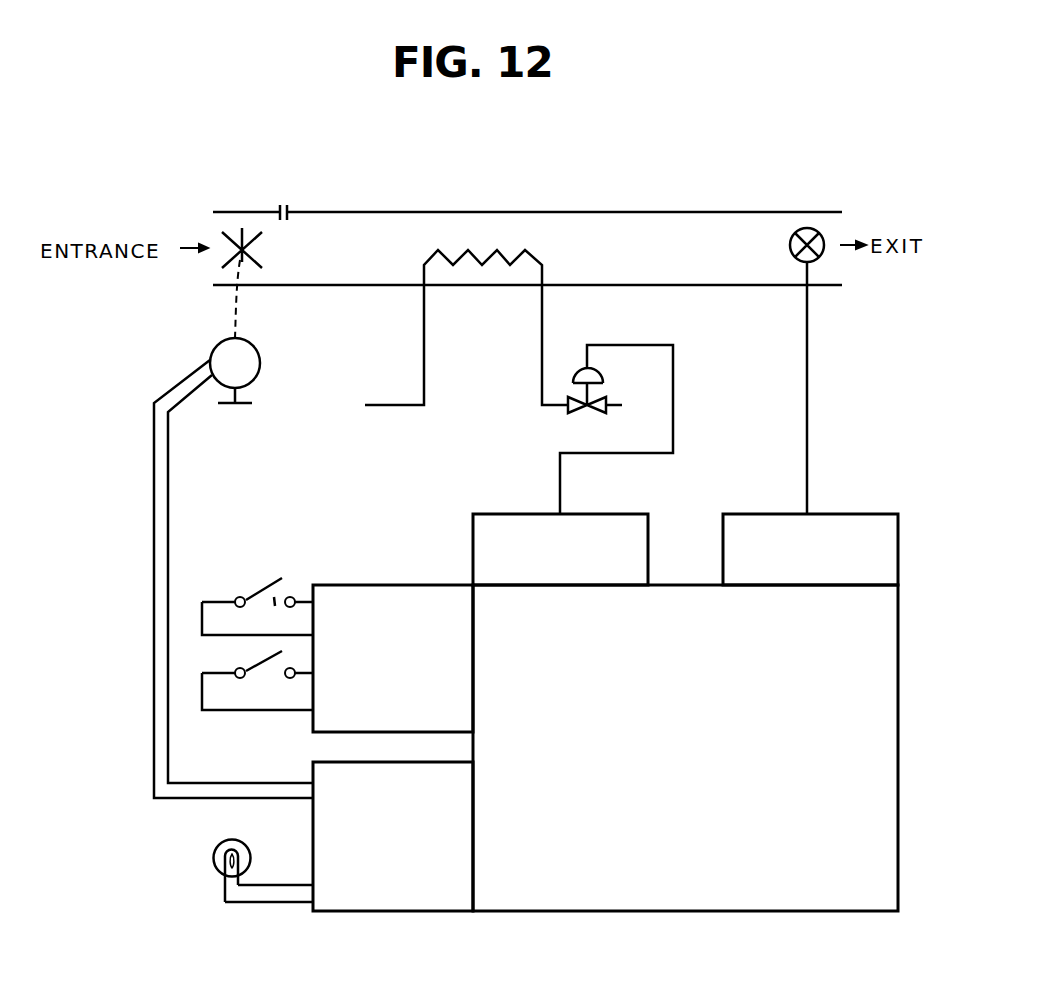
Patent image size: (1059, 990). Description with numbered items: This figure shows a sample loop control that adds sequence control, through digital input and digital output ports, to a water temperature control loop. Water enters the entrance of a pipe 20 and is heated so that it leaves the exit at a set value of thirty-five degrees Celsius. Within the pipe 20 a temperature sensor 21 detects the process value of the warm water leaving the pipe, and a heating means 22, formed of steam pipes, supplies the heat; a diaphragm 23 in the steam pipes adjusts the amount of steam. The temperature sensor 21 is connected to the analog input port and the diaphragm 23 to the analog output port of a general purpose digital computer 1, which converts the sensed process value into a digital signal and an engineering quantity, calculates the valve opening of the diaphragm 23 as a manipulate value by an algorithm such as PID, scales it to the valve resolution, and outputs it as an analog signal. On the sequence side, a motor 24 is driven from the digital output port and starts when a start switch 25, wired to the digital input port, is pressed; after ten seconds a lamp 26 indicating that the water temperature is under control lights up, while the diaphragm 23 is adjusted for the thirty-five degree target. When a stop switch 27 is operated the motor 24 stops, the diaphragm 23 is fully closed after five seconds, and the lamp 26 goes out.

The digital computer 1 is at (793, 913).
The pipe 20 is at (468, 211).
The temperature sensor 21 is at (807, 228).
The heating means 22 is at (508, 256).
The diaphragm 23 is at (580, 368).
The motor 24 is at (260, 363).
The start switch 25 is at (272, 590).
The lamp 26 is at (218, 850).
The stop switch 27 is at (265, 668).